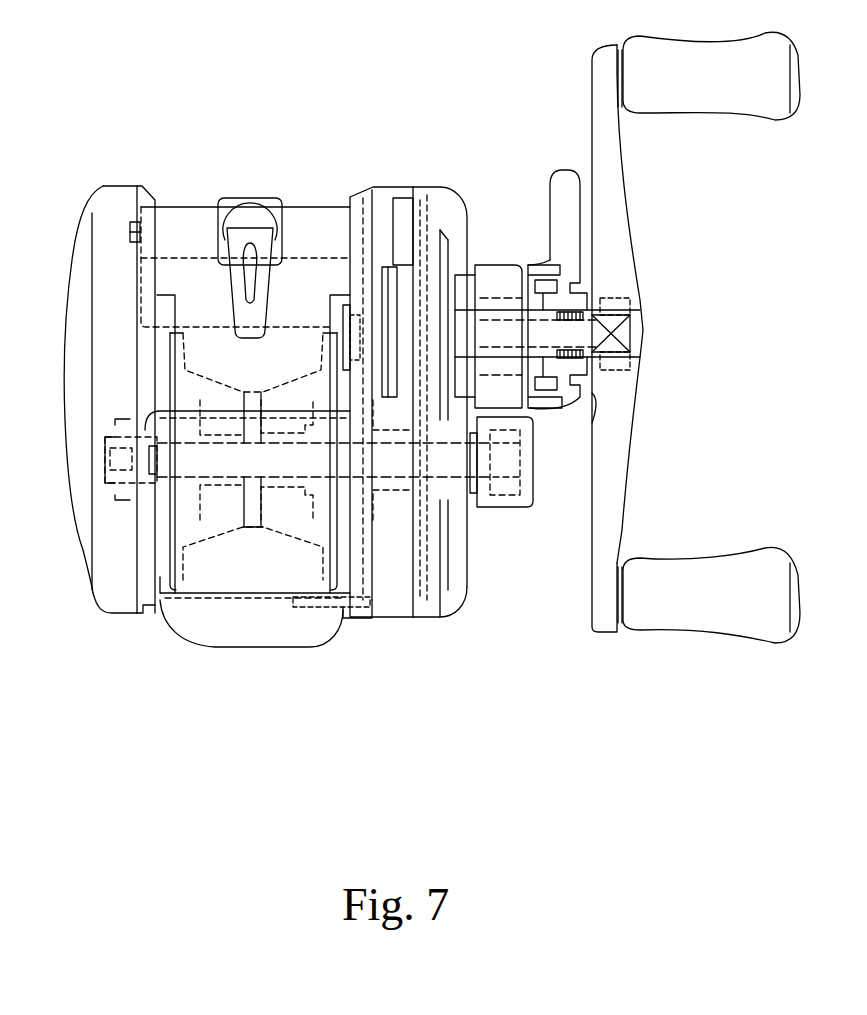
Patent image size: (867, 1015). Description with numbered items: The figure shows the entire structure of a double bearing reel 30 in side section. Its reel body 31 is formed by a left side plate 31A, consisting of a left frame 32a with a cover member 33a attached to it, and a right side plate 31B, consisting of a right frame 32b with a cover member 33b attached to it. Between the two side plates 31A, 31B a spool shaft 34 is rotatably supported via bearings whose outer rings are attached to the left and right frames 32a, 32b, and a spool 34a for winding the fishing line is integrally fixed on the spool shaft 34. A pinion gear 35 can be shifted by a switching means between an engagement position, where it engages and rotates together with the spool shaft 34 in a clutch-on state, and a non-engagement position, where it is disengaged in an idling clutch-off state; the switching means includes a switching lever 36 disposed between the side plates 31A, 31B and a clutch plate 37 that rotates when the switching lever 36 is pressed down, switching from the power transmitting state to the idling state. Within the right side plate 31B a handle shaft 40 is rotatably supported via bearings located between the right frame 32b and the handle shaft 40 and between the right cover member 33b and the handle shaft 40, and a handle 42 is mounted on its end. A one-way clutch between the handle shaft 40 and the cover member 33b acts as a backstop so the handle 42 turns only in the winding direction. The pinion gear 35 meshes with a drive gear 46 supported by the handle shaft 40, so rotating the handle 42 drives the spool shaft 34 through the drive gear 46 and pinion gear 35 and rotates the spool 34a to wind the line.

The double bearing reel 30 is at (238, 133).
The reel body 31 is at (388, 186).
The left side plate 31A is at (118, 186).
The right side plate 31B is at (445, 187).
The left frame 32a is at (142, 616).
The right frame 32b is at (352, 618).
The cover member 33a is at (117, 592).
The cover member 33b is at (438, 593).
The spool shaft 34 is at (207, 477).
The spool 34a is at (255, 527).
The pinion gear 35 is at (422, 487).
The switching lever 36 is at (315, 628).
The clutch plate 37 is at (368, 600).
The handle shaft 40 is at (493, 327).
The handle 42 is at (685, 98).
The drive gear 46 is at (427, 240).